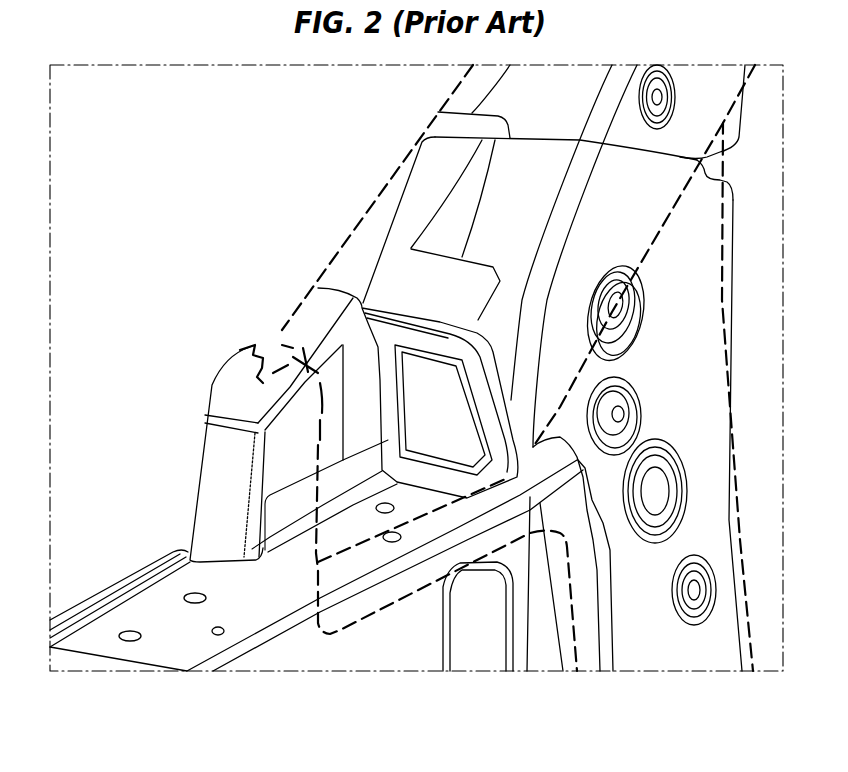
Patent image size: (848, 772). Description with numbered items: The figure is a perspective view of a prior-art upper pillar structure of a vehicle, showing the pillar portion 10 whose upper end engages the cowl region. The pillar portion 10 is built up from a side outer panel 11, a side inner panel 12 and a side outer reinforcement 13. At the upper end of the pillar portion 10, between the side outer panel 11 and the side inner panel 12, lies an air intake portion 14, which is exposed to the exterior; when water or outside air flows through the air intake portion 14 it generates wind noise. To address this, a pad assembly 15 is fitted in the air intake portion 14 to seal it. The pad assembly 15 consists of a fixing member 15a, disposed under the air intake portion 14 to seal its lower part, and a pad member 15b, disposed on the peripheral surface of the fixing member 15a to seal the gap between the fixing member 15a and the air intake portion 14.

The pillar portion 10 is at (313, 258).
The side outer panel 11 is at (383, 613).
The side inner panel 12 is at (360, 240).
The side outer reinforcement 13 is at (298, 620).
The air intake portion 14 is at (360, 420).
The pad assembly 15 is at (148, 230).
The fixing member 15a is at (390, 367).
The pad member 15b is at (318, 288).